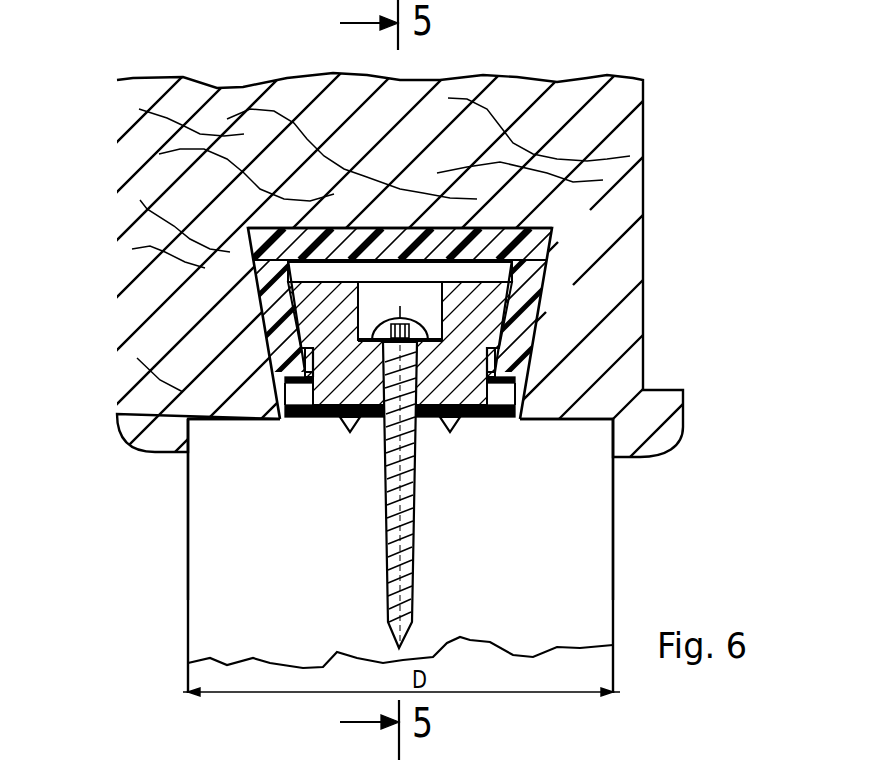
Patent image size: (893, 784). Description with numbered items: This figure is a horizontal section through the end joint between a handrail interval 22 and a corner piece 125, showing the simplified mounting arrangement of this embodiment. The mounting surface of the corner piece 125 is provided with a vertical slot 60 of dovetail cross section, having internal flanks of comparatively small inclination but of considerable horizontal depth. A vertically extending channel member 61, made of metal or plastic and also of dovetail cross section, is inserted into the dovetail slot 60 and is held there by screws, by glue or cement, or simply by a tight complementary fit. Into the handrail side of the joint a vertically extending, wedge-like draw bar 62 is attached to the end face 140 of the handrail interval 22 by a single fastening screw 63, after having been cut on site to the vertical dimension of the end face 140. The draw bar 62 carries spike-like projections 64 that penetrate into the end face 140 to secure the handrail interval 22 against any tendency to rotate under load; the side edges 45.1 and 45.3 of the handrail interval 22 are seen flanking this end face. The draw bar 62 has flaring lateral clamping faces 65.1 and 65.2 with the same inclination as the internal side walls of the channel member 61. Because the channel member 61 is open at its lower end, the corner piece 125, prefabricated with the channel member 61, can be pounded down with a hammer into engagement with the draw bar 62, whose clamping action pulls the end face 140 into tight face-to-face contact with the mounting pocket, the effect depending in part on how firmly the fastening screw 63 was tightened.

The corner piece 125 is at (121, 92).
The handrail interval 22 is at (593, 542).
The side edge of lower part 45.1 is at (188, 437).
The side edge of lower part 45.3 is at (613, 437).
The end face 140 is at (534, 416).
The vertical slot 60 is at (252, 262).
The channel member 61 is at (533, 258).
The lateral clamping face 65.1 is at (286, 332).
The lateral clamping face 65.2 is at (522, 325).
The draw bar 62 is at (318, 400).
The spike-like projections 64 is at (348, 428).
The fastening screw 63 is at (403, 553).